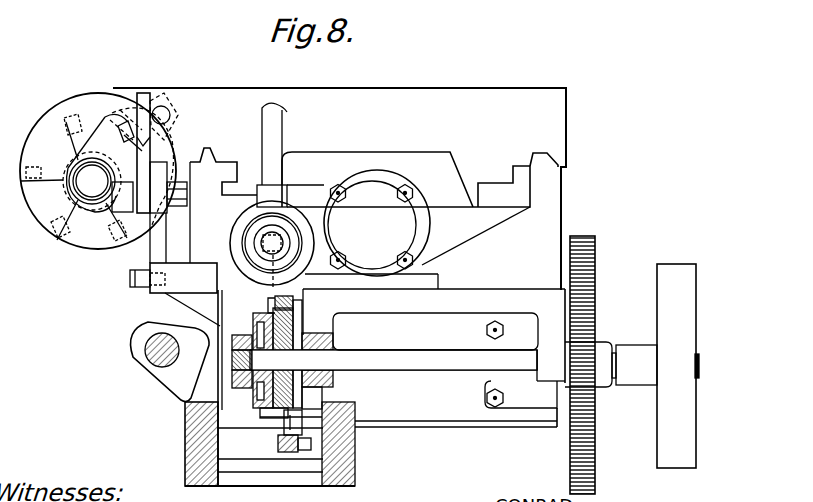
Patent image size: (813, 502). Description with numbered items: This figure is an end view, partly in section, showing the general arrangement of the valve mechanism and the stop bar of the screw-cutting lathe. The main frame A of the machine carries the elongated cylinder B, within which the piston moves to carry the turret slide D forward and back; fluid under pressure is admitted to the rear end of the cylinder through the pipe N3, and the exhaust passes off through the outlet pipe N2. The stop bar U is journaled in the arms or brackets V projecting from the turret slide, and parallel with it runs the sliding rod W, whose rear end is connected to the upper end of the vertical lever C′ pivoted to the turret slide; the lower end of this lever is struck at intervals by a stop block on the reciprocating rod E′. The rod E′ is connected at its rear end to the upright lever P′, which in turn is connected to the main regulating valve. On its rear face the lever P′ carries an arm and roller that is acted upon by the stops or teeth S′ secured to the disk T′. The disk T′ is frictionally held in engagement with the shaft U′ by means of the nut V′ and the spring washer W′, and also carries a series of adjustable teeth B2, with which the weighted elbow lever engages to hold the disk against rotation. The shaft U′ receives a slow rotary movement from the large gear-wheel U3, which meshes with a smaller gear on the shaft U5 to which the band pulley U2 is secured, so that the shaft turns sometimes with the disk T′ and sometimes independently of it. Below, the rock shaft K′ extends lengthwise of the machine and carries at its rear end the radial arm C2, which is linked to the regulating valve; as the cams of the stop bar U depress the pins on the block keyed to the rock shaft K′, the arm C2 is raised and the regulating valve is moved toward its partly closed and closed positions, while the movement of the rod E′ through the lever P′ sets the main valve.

The main frame A is at (339, 287).
The stop bar U is at (92, 171).
The vertical lever C′ is at (120, 169).
The arms or brackets V is at (119, 147).
The sliding rod W is at (170, 114).
The pipe N3 is at (285, 150).
The turret slide D is at (377, 160).
The cylinder B is at (377, 223).
The outlet pipe N2 is at (262, 243).
The main valve rod E′ is at (146, 267).
The upright lever P′ is at (180, 285).
The rock shaft K′ is at (146, 356).
The radial arm C2 is at (172, 388).
The stops or teeth S′ is at (265, 292).
The nut V′ is at (237, 331).
The disk T′ is at (297, 312).
The spring washer W′ is at (253, 395).
The adjustable stops or teeth B2 is at (300, 434).
The shaft U′ is at (434, 358).
The large gear-wheel U3 is at (602, 362).
The band pulley U2 is at (649, 366).
The shaft U5 is at (699, 370).